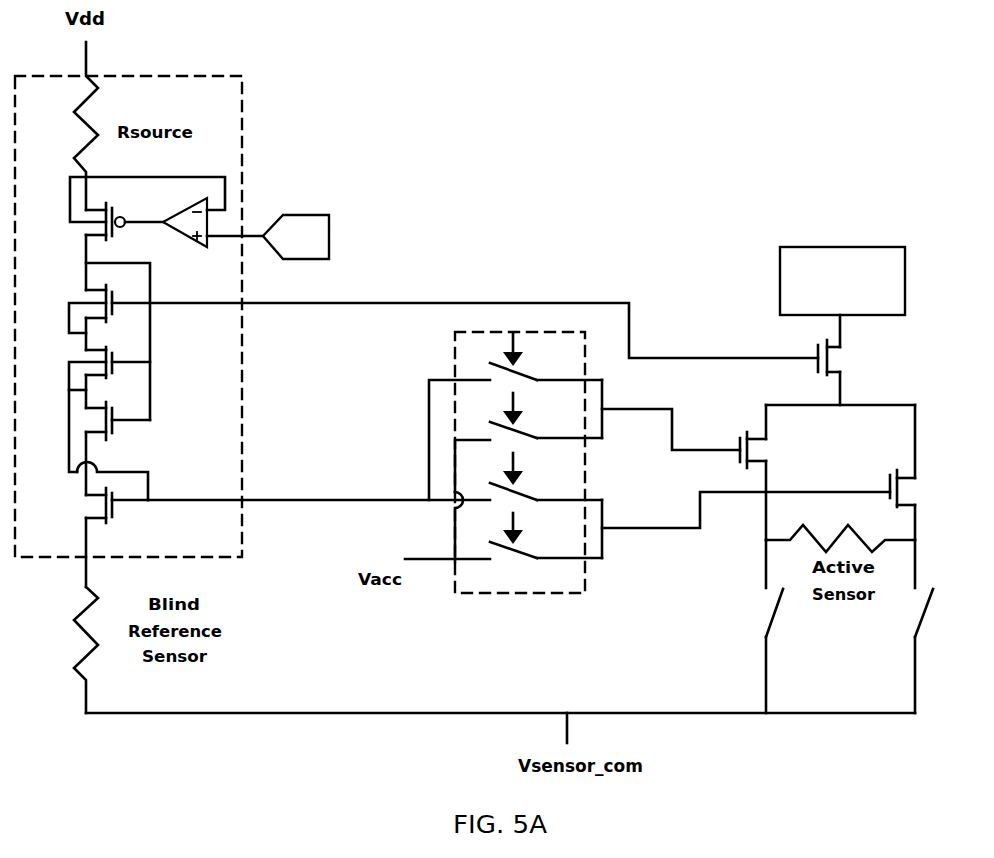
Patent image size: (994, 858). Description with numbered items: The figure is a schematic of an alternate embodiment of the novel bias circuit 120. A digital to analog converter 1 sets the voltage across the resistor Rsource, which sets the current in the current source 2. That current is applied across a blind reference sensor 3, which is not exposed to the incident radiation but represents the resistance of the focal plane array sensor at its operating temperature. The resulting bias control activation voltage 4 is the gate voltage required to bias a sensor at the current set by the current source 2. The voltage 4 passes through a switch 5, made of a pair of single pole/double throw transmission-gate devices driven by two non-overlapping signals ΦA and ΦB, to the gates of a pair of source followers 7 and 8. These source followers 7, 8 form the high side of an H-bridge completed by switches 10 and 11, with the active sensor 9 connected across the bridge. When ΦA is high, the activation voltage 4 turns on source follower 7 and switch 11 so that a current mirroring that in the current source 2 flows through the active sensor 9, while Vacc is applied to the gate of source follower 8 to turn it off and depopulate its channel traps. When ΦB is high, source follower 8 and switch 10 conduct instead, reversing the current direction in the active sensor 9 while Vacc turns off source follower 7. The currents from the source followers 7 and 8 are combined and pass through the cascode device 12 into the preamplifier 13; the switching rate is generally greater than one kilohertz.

The digital to analog converter 1 is at (296, 224).
The current source 2 is at (139, 331).
The reference sensor 3 is at (91, 650).
The bias control activation voltage 4 is at (319, 487).
The switch 5 is at (647, 462).
The source follower 7 is at (739, 472).
The source follower 8 is at (895, 472).
The active sensor 9 is at (840, 529).
The switch 10 is at (770, 626).
The switch 11 is at (906, 626).
The cascode device 12 is at (846, 360).
The preamplifier 13 is at (842, 281).
The bias circuit 120 is at (465, 184).